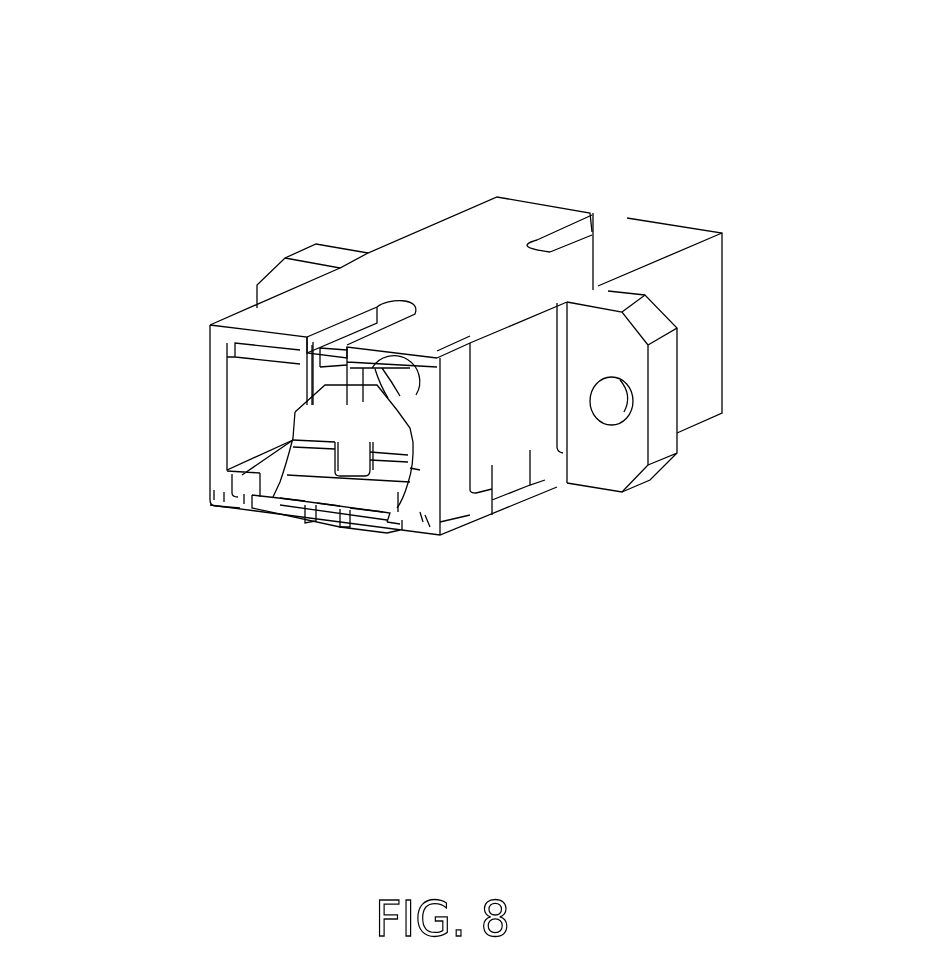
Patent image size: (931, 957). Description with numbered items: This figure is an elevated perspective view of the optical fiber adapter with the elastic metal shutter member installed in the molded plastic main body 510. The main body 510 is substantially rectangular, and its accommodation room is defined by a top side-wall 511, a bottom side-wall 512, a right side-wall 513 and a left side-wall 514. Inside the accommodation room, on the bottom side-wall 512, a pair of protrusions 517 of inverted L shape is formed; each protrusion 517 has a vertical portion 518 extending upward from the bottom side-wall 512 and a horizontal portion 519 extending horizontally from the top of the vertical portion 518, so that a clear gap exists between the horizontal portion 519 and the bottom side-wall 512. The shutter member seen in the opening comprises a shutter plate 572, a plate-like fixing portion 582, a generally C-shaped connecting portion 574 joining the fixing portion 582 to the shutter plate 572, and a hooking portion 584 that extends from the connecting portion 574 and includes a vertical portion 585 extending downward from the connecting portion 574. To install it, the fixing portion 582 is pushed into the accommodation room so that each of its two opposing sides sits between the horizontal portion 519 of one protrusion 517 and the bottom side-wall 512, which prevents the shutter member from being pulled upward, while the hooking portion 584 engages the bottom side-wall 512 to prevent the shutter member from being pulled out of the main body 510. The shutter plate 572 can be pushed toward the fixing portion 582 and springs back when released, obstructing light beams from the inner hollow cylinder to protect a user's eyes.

The main body 510 is at (700, 194).
The top side-wall 511 is at (432, 260).
The bottom side-wall 512 is at (263, 510).
The right side-wall 513 is at (450, 478).
The left side-wall 514 is at (217, 430).
The protrusions 517 is at (215, 492).
The vertical portion 518 is at (225, 495).
The horizontal portion 519 is at (246, 499).
The shutter plate 572 is at (322, 412).
The connecting portion 574 is at (357, 520).
The fixing portion 582 is at (398, 512).
The hooking portion 584 is at (325, 517).
The vertical portion 585 is at (310, 511).